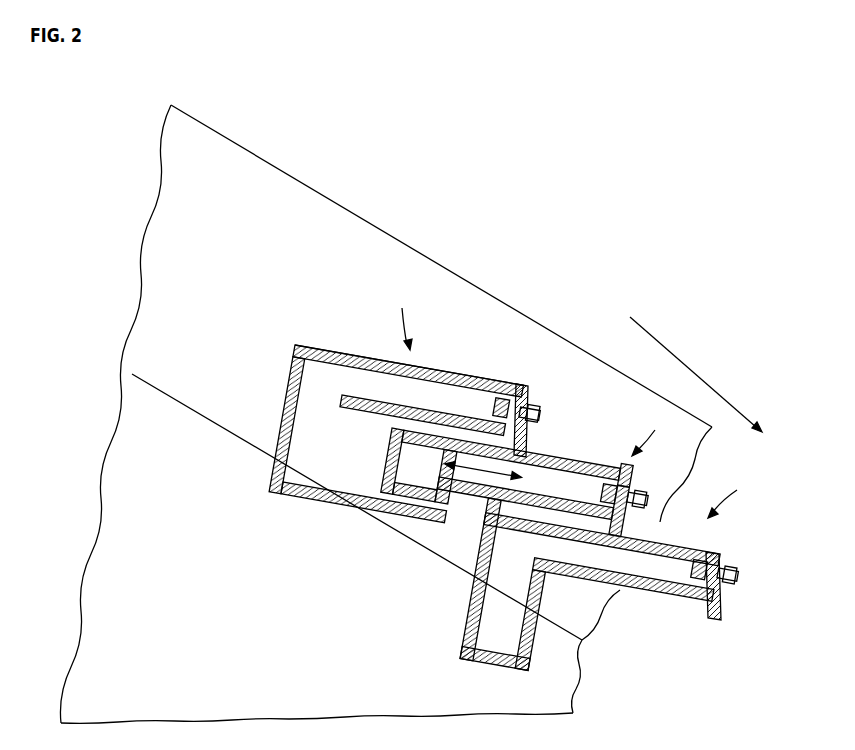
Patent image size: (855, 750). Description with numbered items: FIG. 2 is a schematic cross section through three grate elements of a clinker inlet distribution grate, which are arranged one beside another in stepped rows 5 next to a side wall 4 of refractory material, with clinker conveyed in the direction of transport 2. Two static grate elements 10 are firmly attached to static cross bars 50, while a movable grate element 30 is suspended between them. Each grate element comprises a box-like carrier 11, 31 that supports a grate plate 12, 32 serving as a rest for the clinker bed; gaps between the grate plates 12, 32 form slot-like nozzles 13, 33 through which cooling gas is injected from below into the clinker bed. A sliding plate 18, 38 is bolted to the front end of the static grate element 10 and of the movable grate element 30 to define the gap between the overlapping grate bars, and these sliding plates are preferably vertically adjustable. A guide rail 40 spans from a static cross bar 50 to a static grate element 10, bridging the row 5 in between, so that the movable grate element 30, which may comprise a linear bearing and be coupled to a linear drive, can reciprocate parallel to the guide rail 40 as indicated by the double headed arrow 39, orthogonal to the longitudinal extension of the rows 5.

The direction of transport 2 is at (699, 374).
The side wall 4 is at (240, 241).
The row 5 is at (570, 401).
The static grate element 10 is at (519, 452).
The carrier 11 is at (287, 425).
The grate plate 12 is at (408, 371).
The nozzle 13 is at (409, 365).
The sliding plate 18 is at (524, 447).
The movable grate element 30 is at (507, 464).
The carrier 31 is at (413, 465).
The grate plate 32 is at (626, 475).
The nozzle 33 is at (480, 437).
The sliding plate 38 is at (619, 510).
The double headed arrow 39 is at (472, 490).
The guide rail 40 is at (364, 502).
The cross bar 50 is at (272, 470).